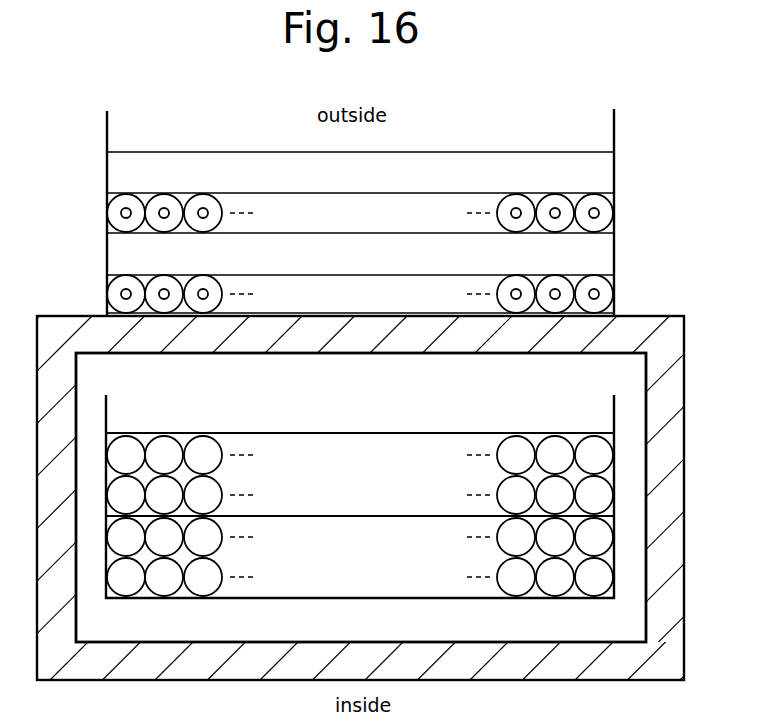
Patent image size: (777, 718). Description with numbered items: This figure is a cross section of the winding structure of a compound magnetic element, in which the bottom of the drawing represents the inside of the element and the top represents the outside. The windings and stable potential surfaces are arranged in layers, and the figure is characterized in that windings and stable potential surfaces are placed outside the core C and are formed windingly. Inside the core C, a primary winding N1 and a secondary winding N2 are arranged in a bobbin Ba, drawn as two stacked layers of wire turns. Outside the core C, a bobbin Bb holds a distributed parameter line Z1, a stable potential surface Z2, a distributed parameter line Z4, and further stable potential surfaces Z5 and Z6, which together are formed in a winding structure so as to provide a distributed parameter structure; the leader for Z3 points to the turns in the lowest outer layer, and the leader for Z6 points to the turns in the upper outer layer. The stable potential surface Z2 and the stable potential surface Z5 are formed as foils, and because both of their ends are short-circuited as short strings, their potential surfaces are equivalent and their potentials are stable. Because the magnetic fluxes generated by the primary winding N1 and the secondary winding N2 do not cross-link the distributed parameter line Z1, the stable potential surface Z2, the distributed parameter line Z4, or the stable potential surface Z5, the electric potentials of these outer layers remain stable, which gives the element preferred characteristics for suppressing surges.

The core C is at (671, 388).
The bobbin Ba is at (375, 490).
The bobbin Bb is at (376, 212).
The distributed parameter line Z1 is at (360, 298).
The stable potential surface Z2 is at (360, 258).
The wire turns in first zone Z3 is at (213, 282).
The distributed parameter line Z4 is at (360, 217).
The stable potential surface Z5 is at (360, 172).
The stable potential surface Z6 is at (213, 200).
The primary winding N1 is at (360, 474).
The secondary winding N2 is at (360, 557).